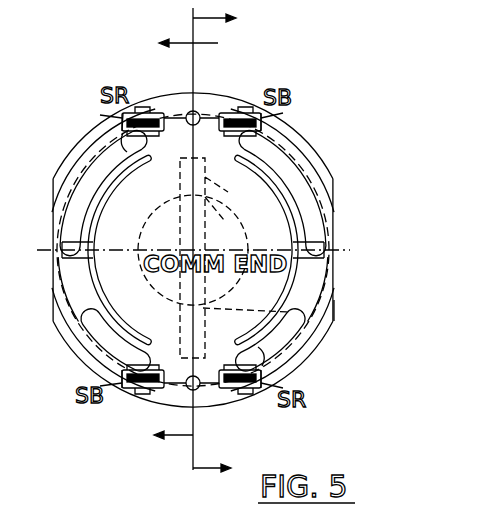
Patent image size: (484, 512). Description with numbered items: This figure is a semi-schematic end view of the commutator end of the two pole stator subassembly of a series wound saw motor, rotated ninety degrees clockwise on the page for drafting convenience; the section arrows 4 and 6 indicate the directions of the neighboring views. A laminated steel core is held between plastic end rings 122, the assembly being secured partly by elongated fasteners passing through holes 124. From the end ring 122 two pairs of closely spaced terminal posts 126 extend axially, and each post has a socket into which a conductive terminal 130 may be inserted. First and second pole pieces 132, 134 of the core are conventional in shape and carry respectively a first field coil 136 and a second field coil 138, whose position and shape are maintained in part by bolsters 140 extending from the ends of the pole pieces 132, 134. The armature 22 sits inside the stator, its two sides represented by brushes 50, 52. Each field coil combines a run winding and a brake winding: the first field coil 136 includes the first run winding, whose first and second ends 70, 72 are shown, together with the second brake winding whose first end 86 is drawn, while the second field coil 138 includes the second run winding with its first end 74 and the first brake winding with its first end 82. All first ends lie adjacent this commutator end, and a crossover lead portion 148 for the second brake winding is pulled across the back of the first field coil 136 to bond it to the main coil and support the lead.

The section line 4- 4 is at (203, 243).
The section line 6- 6 is at (12, 118).
The armature 22 is at (233, 216).
The brush 50 is at (207, 183).
The brush 52 is at (328, 320).
The first end of first run winding 70 is at (85, 96).
The second end of first run winding 72 is at (49, 501).
The first end of second run winding 74 is at (286, 418).
The first end of first brake field winding 82 is at (262, 95).
The first end of second brake field winding 86 is at (128, 403).
The end ring 122 is at (182, 93).
The hole 124 is at (200, 110).
The terminal post 126 is at (160, 108).
The conductive terminal 130 is at (123, 125).
The first pole piece 132 is at (126, 213).
The second pole piece 134 is at (290, 231).
The first field coil 136 is at (62, 160).
The second field coil 138 is at (310, 177).
The bolster 140 is at (113, 305).
The crossover lead portion 148 is at (67, 330).